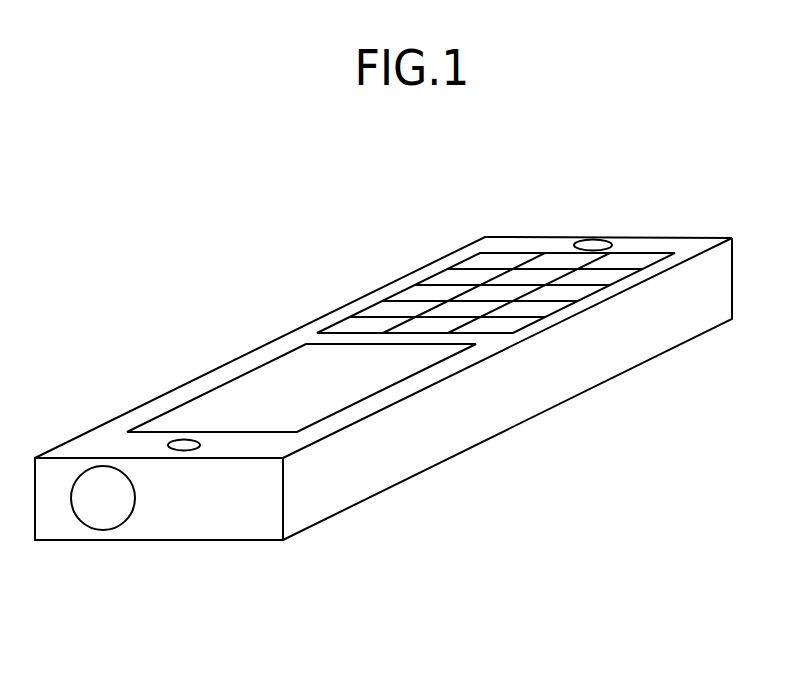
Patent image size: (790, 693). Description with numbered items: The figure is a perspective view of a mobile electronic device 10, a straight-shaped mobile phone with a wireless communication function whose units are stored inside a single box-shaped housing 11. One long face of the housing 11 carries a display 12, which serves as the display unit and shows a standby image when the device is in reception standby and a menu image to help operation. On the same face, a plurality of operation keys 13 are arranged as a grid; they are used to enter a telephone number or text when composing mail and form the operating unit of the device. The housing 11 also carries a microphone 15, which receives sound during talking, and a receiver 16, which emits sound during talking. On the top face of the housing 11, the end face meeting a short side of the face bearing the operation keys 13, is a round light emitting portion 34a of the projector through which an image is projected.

The mobile electronic device 10 is at (223, 258).
The housing 11 is at (533, 402).
The display 12 is at (222, 408).
The operation keys 13 is at (628, 258).
The microphone 15 is at (593, 242).
The receiver 16 is at (184, 443).
The light emitting portion 34a is at (103, 498).